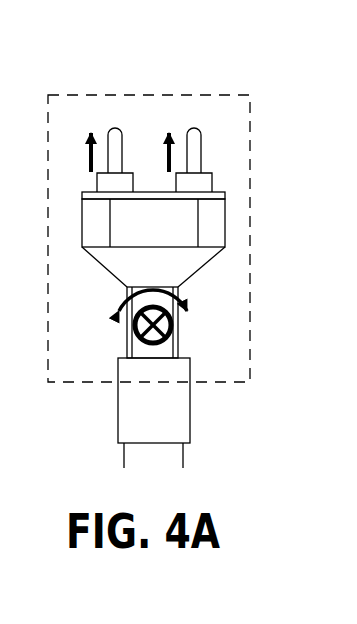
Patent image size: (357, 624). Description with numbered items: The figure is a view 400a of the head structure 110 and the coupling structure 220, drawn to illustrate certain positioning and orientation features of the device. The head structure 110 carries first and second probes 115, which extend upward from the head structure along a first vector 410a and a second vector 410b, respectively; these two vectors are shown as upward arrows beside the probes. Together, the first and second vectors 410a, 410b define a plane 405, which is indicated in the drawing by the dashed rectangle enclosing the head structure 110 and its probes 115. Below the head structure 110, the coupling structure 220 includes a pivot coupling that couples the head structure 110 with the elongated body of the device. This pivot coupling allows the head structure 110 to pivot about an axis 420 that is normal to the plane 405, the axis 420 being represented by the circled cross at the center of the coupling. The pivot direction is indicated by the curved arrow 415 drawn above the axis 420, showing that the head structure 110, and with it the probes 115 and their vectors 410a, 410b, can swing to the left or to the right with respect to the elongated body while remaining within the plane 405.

The view 400a is at (137, 47).
The plane 405 is at (149, 238).
The head structure 110 is at (210, 213).
The probes 115 is at (201, 158).
The first vector 410a is at (93, 137).
The second vector 410b is at (168, 137).
The arrow 415 is at (192, 312).
The axis 420 is at (178, 340).
The coupling structure 220 is at (180, 406).